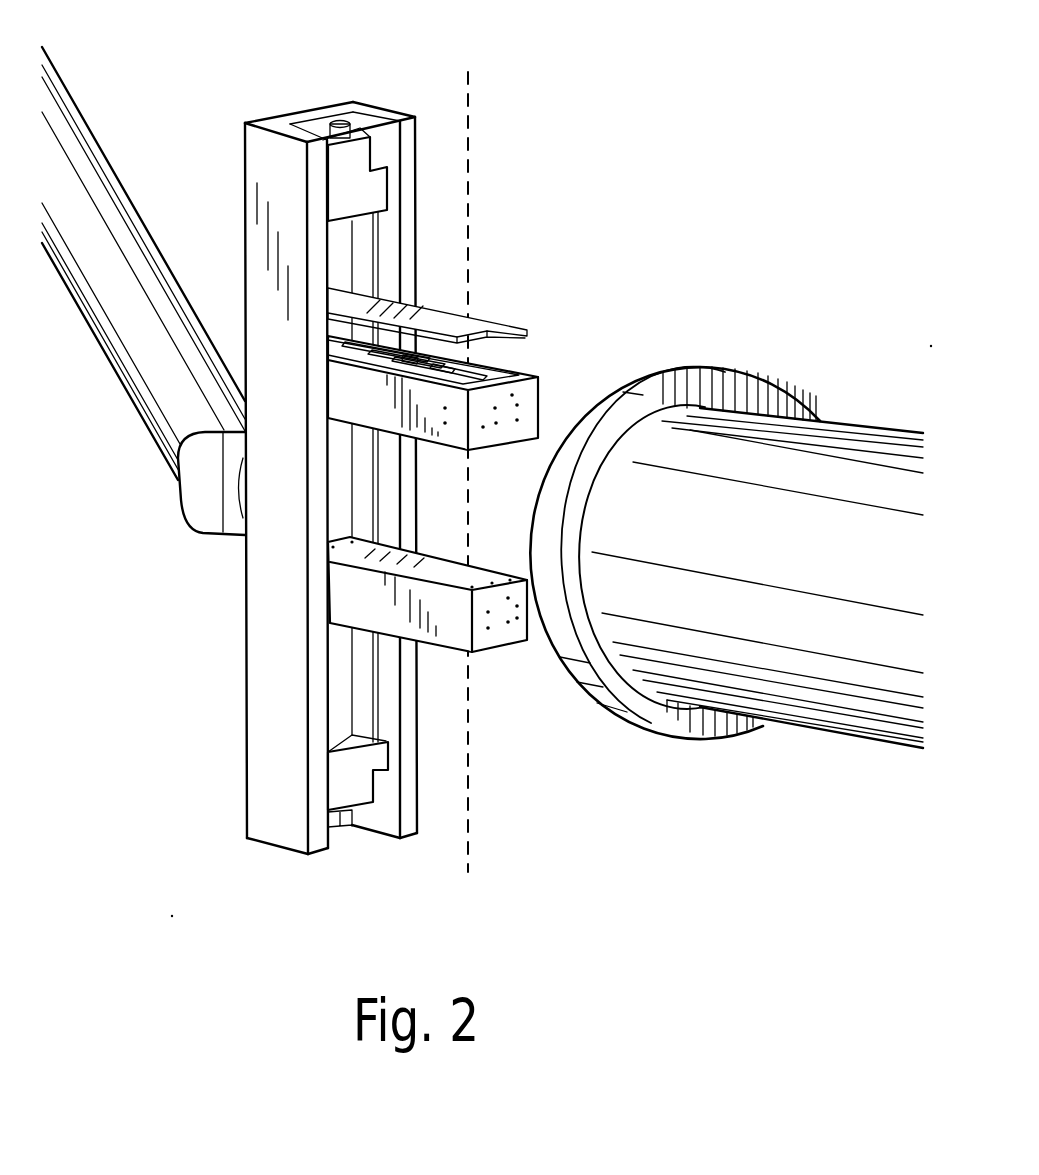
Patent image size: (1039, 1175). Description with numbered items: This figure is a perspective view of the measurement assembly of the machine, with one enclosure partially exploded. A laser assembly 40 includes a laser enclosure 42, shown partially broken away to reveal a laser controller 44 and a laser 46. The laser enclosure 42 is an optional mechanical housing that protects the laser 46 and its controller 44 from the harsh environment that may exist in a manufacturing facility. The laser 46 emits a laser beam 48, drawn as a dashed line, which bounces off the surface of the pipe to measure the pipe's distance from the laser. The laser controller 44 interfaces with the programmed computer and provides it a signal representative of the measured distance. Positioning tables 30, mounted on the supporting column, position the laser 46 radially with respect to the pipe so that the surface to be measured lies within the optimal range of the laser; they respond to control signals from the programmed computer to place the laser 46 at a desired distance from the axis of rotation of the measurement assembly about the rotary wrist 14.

The rotary wrist 14 is at (208, 537).
The positioning table 30 is at (379, 158).
The laser assembly 40 is at (497, 447).
The laser enclosure 42 is at (540, 416).
The laser controller 44 is at (500, 341).
The laser 46 is at (503, 367).
The laser beam 48 is at (470, 182).